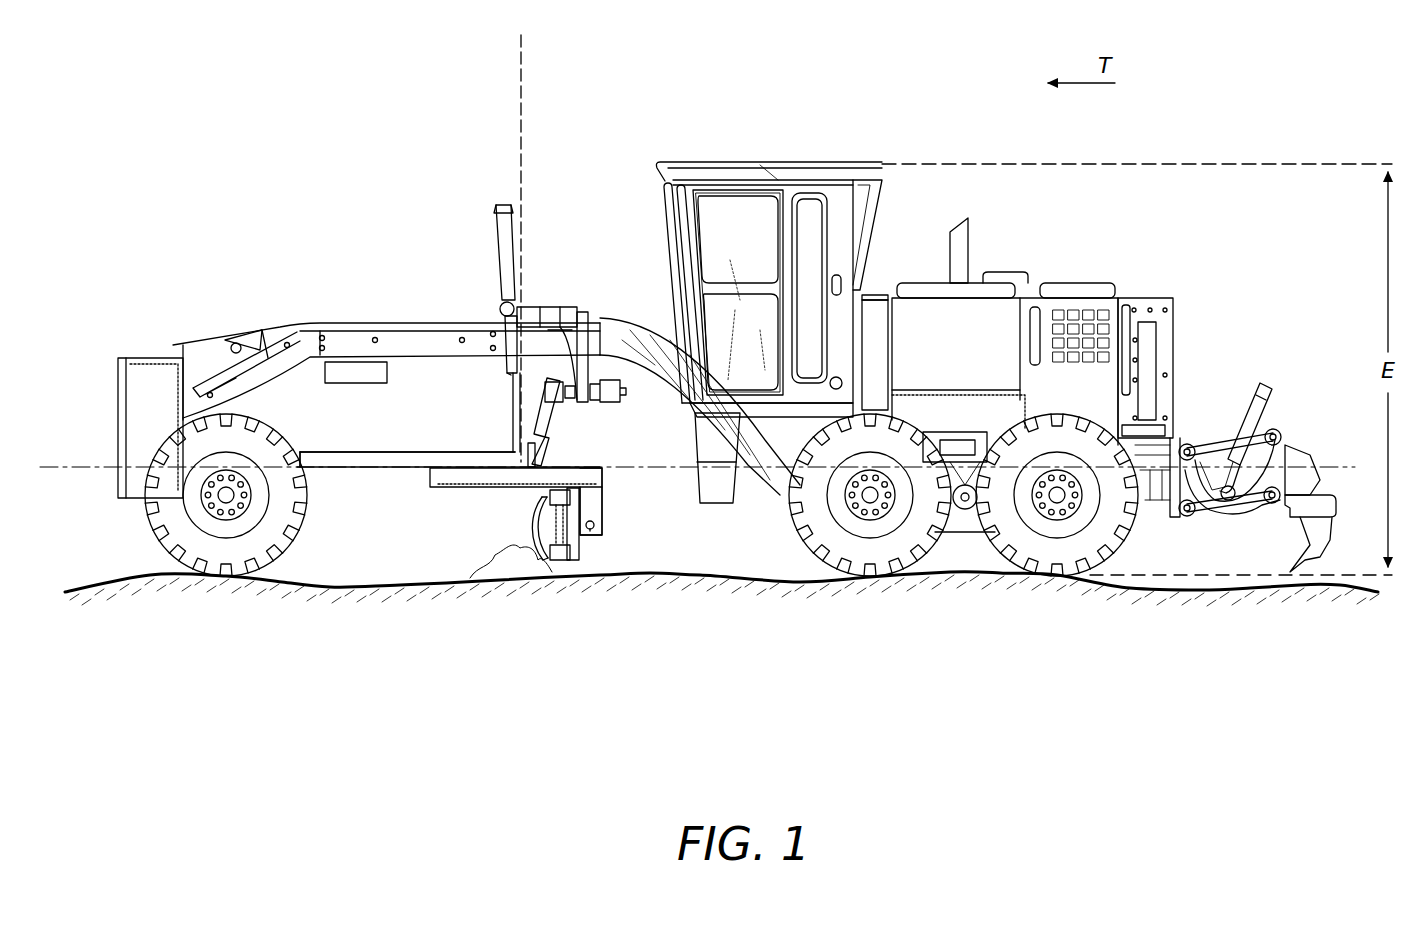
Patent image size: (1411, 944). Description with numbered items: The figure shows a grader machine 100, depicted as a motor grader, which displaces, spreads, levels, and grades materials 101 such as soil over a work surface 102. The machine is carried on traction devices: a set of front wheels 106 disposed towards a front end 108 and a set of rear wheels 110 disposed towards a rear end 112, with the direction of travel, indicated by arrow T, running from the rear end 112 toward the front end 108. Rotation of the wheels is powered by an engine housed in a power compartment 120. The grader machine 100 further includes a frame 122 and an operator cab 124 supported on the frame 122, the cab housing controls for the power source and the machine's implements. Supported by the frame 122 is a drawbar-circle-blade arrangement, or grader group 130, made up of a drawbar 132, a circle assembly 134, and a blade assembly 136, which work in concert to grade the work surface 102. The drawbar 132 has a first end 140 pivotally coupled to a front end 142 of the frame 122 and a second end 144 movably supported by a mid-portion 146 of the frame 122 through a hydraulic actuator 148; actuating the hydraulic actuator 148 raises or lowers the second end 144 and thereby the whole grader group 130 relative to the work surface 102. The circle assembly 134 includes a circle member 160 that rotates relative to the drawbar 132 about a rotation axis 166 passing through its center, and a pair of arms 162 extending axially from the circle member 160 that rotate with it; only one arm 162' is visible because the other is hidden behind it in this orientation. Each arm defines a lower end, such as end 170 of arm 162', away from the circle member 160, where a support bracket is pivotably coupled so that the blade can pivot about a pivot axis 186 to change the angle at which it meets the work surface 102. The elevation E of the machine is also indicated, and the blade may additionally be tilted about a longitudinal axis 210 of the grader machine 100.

The grader machine 100 is at (1272, 130).
The materials 101 is at (530, 503).
The work surface 102 is at (118, 576).
The front wheels 106 is at (292, 562).
The front end 108 is at (118, 386).
The rear wheels 110 is at (938, 560).
The rear end 112 is at (1175, 310).
The power compartment 120 is at (1043, 283).
The frame 122 is at (625, 322).
The operator cab 124 is at (842, 162).
The grader group 130 is at (445, 439).
The drawbar 132 is at (322, 468).
The circle assembly 134 is at (455, 490).
The blade assembly 136 is at (510, 553).
The first end 140 is at (318, 450).
The front end 142 is at (264, 330).
The second end 144 is at (503, 450).
The mid-portion 146 is at (494, 306).
The hydraulic actuator 148 is at (494, 222).
The circle member 160 is at (555, 465).
The pair of arms 162 is at (634, 511).
The arm 162' is at (614, 453).
The rotation axis 166 is at (523, 53).
The end 170 is at (596, 528).
The pivot axis 186 is at (592, 530).
The longitudinal axis 210 is at (1340, 465).